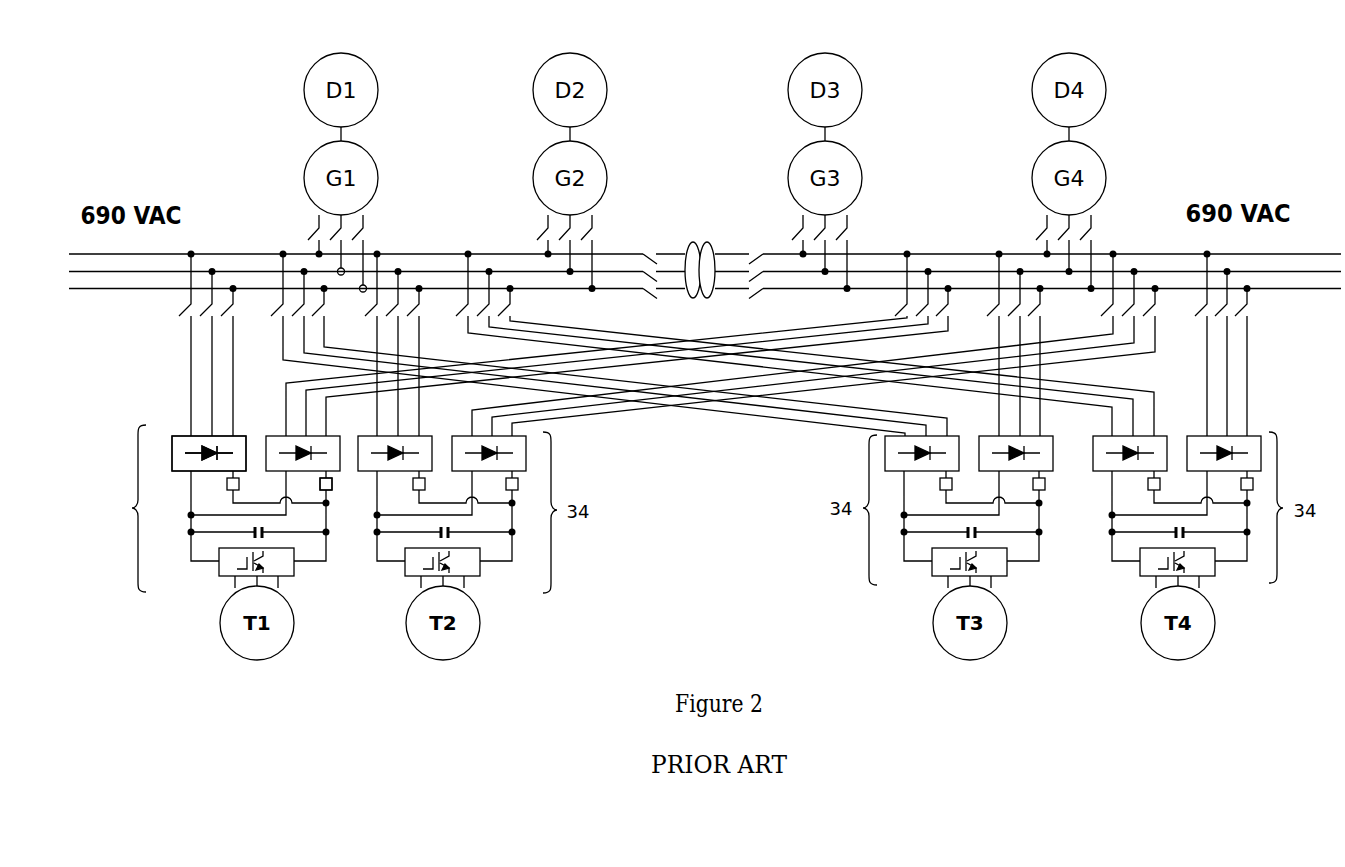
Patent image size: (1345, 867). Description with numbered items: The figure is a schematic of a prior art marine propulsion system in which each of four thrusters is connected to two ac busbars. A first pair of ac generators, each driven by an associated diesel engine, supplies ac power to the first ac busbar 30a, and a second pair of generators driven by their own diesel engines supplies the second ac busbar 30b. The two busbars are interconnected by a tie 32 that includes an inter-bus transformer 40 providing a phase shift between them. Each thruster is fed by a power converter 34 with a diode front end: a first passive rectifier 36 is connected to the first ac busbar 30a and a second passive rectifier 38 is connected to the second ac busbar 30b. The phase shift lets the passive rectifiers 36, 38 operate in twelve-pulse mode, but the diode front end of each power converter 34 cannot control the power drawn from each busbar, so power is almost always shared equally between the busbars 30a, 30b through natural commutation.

The first ac busbar 30a is at (433, 240).
The second ac busbar 30b is at (1000, 242).
The tie 32 is at (665, 242).
The inter-bus transformer 40 is at (712, 237).
The power converter 34 is at (216, 542).
The first passive rectifier 36 is at (172, 423).
The second passive rectifier 38 is at (342, 484).